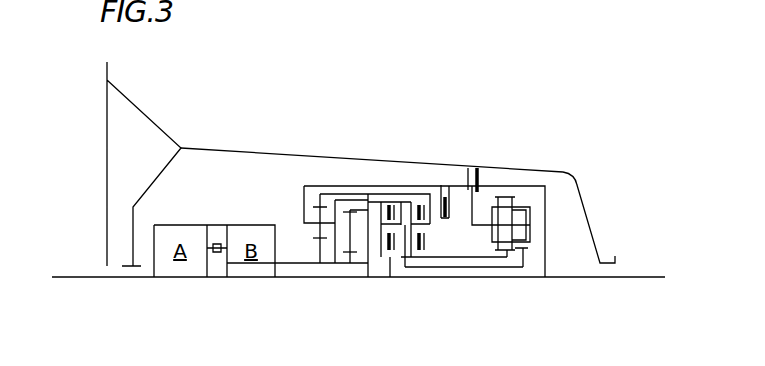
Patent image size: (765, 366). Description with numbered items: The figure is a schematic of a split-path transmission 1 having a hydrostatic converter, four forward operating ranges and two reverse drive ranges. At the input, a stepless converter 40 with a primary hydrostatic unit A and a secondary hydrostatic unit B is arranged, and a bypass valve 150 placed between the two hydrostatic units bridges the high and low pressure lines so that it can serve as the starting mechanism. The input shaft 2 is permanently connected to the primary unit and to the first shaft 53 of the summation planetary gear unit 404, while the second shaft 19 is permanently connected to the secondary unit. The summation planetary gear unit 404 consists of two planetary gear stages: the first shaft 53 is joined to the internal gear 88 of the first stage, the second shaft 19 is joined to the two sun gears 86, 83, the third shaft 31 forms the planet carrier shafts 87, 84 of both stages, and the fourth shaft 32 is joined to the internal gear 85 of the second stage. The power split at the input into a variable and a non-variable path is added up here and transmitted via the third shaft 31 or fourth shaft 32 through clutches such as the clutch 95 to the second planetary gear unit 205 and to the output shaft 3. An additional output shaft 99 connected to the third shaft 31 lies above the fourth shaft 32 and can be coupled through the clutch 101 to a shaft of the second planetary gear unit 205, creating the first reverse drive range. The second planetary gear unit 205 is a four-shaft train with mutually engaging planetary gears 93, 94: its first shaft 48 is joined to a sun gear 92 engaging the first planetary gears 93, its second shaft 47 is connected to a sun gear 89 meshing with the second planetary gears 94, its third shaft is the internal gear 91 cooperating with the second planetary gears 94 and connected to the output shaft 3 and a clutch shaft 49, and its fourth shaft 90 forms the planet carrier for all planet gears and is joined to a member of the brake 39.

The vehicle 1 is at (225, 150).
The input shaft 2 is at (82, 277).
The output shaft 3 is at (628, 277).
The second shaft 19 is at (282, 264).
The third shaft 31 is at (352, 210).
The fourth shaft 32 is at (335, 200).
The brake 39 is at (468, 168).
The stepless converter 40 is at (195, 142).
The second shaft 47 is at (462, 257).
The first shaft 48 is at (483, 267).
The clutch shaft 49 is at (493, 278).
The first shaft 53 is at (298, 221).
The sun gear 83 is at (318, 240).
The planet carrier shaft 84 is at (314, 224).
The internal gear 85 is at (320, 206).
The sun gear 86 is at (352, 254).
The planet carrier shaft 87 is at (346, 233).
The internal gear 88 is at (370, 185).
The sun gear 89 is at (503, 251).
The fourth shaft 90 is at (482, 228).
The internal gear 91 is at (505, 197).
The sun gear 92 is at (523, 250).
The first planetary gears 93 is at (525, 213).
The second planetary gears 94 is at (520, 208).
The clutch 95 is at (403, 287).
The additional output shaft 99 is at (320, 195).
The clutch 101 is at (441, 185).
The bypass valve 150 is at (217, 244).
The second planetary gear unit 205 is at (532, 157).
The summation planetary gear unit 404 is at (362, 143).